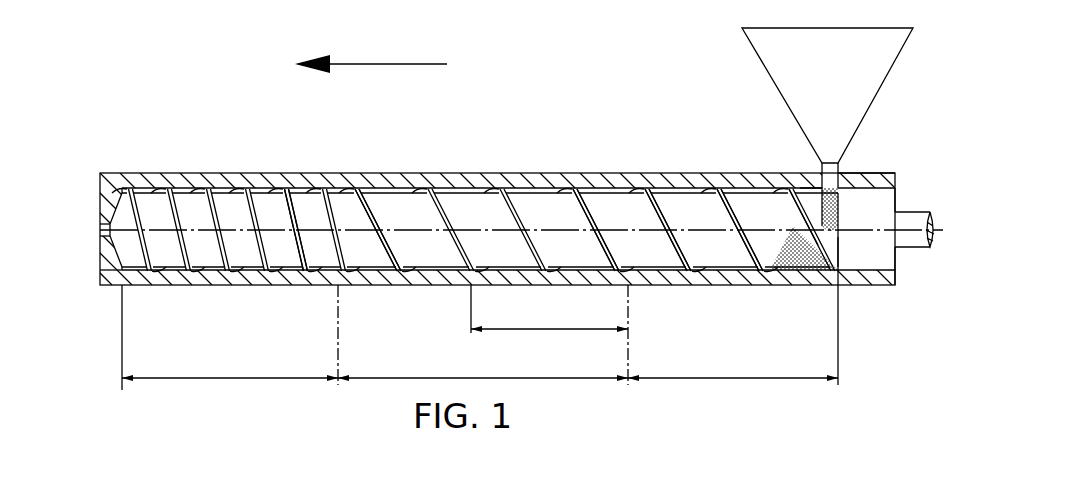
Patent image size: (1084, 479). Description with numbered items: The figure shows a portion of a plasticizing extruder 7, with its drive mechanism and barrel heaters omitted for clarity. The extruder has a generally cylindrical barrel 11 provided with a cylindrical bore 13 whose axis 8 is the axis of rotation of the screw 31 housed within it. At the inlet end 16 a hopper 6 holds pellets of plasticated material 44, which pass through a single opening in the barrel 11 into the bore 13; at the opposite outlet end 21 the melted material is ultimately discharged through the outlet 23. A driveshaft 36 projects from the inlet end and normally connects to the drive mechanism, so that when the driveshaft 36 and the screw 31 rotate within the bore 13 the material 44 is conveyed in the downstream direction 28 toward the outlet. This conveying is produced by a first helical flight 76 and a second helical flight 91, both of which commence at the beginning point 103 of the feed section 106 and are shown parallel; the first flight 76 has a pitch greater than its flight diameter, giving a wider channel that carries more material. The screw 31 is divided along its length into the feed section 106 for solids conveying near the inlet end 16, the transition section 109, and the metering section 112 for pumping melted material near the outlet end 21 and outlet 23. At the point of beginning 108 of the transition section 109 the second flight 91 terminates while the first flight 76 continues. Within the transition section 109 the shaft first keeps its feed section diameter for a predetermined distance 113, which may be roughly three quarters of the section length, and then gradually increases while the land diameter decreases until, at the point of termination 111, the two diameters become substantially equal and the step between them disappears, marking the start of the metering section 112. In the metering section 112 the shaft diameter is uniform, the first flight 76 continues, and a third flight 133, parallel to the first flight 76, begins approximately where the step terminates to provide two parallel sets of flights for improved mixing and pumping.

The hopper 6 is at (772, 60).
The plasticizing extruder 7 is at (374, 120).
The axis 8 is at (936, 228).
The barrel 11 is at (226, 176).
The cylindrical bore 13 is at (680, 192).
The inlet end 16 is at (872, 173).
The outlet end 21 is at (101, 178).
The outlet 23 is at (100, 281).
The downstream direction 28 is at (385, 66).
The screw 31 is at (895, 259).
The driveshaft 36 is at (908, 210).
The pellets of plasticated material 44 is at (812, 285).
The first helical flight 76 is at (358, 192).
The second helical flight 91 is at (709, 192).
The beginning point of feed section 103 is at (840, 334).
The feed section 106 is at (756, 377).
The point of beginning of transition section 108 is at (628, 343).
The transition section 109 is at (484, 377).
The point of termination of transition section 111 is at (340, 358).
The metering section 112 is at (236, 377).
The predetermined distance 113 is at (586, 324).
The third flight 133 is at (312, 193).